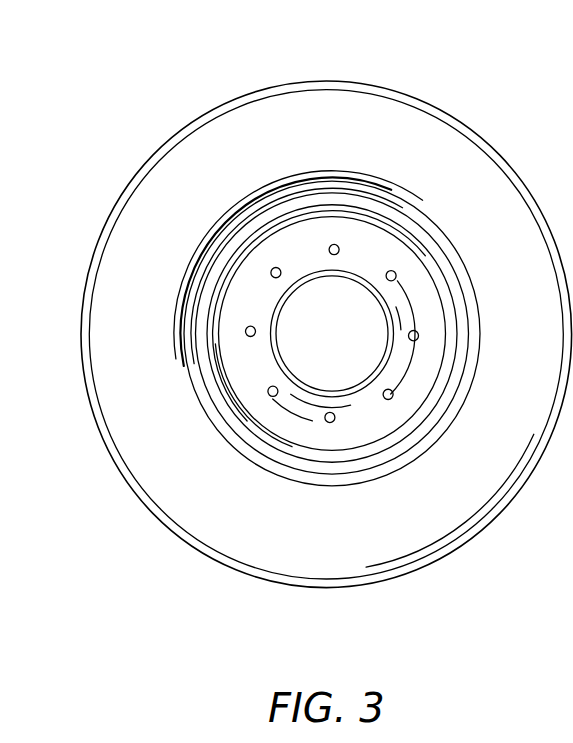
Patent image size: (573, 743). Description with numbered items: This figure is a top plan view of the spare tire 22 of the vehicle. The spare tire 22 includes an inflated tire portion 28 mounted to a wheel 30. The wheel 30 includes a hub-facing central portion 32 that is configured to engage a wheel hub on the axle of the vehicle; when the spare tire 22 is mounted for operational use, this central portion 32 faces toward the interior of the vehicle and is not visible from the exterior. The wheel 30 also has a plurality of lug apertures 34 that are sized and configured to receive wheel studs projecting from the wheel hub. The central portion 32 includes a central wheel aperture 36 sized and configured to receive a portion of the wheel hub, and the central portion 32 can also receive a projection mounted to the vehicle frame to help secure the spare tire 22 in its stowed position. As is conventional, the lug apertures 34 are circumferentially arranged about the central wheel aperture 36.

The spare tire 22 is at (84, 58).
The inflated tire portion 28 is at (467, 128).
The wheel 30 is at (475, 331).
The hub-facing central portion 32 is at (245, 303).
The lug apertures 34 is at (277, 268).
The central wheel aperture 36 is at (283, 364).